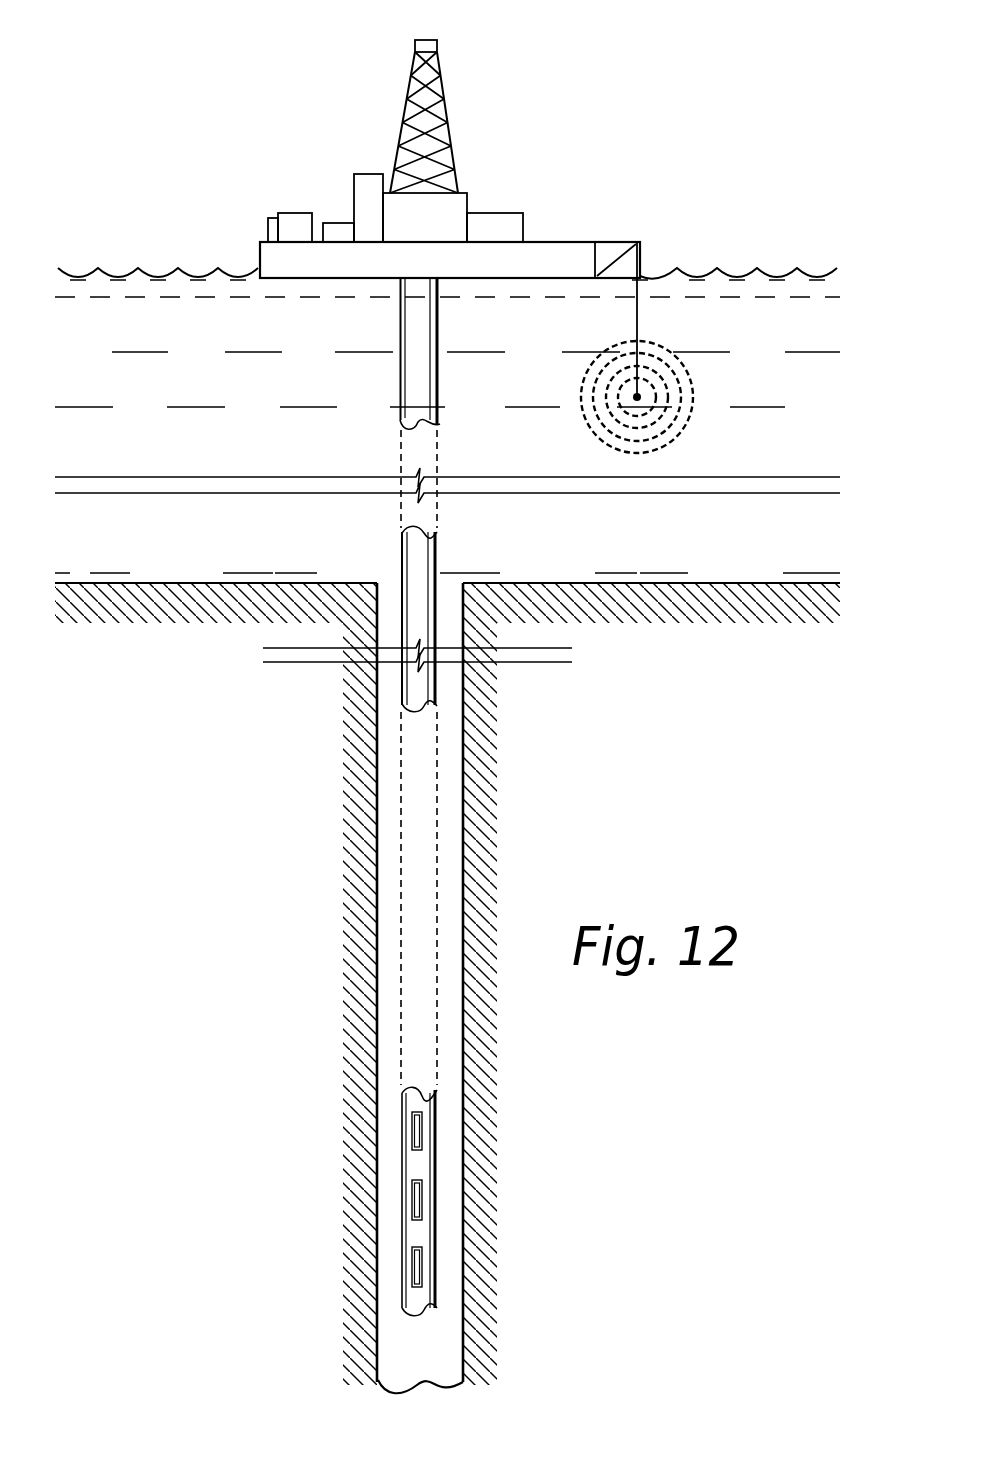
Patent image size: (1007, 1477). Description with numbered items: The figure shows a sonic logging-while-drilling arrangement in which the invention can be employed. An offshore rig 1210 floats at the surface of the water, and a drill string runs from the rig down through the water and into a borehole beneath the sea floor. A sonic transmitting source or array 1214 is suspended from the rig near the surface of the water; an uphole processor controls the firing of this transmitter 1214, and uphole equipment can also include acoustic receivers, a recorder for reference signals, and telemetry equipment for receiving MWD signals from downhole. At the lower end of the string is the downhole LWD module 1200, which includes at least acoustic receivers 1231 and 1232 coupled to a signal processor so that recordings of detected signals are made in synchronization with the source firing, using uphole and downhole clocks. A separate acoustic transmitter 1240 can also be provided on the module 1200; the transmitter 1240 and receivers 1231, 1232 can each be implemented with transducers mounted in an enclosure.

The downhole LWD module 1200 is at (431, 1201).
The offshore rig 1210 is at (532, 72).
The sonic transmitting source 1214 is at (637, 397).
The acoustic transmitter 1240 is at (412, 1125).
The acoustic receiver 1231 is at (410, 1204).
The acoustic receiver 1232 is at (410, 1265).